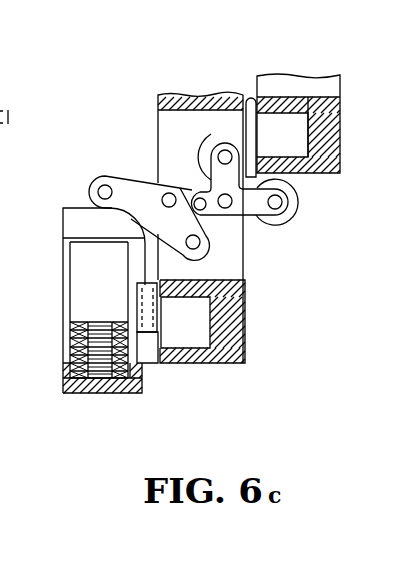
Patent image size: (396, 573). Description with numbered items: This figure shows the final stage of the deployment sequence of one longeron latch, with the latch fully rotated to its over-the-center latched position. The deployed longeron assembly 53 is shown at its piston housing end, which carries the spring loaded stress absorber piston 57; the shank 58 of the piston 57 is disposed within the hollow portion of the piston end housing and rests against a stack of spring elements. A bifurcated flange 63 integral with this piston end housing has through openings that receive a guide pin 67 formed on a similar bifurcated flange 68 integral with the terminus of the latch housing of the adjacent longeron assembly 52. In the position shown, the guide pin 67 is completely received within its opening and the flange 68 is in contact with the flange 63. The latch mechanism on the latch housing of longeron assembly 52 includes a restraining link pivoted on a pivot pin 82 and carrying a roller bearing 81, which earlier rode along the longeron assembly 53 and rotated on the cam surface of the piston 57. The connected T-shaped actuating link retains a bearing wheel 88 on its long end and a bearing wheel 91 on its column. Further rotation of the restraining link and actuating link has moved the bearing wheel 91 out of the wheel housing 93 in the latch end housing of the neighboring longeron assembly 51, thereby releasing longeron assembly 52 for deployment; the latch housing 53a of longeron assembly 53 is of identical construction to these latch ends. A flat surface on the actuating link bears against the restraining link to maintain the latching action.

The longeron assembly 51 is at (340, 122).
The longeron assembly 52 is at (246, 347).
The longeron assembly 53 is at (75, 392).
The latch housing 53a is at (65, 390).
The stress absorber piston 57 is at (100, 233).
The shank 58 is at (115, 293).
The bifurcated flange 63 is at (158, 326).
The guide pin 67 is at (185, 336).
The bifurcated flange 68 is at (148, 353).
The roller bearing 81 is at (99, 176).
The pivot pin 82 is at (204, 243).
The bearing wheel 88 is at (296, 207).
The bearing wheel 91 is at (205, 142).
The wheel housing 93 is at (301, 162).